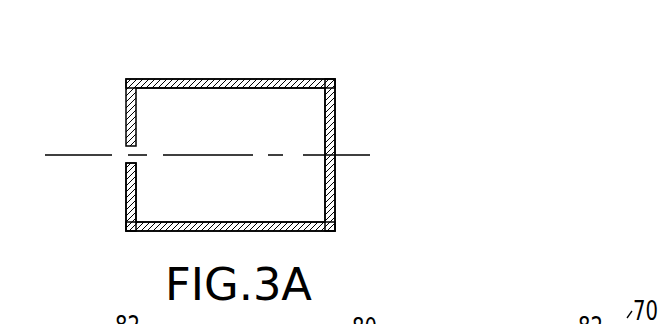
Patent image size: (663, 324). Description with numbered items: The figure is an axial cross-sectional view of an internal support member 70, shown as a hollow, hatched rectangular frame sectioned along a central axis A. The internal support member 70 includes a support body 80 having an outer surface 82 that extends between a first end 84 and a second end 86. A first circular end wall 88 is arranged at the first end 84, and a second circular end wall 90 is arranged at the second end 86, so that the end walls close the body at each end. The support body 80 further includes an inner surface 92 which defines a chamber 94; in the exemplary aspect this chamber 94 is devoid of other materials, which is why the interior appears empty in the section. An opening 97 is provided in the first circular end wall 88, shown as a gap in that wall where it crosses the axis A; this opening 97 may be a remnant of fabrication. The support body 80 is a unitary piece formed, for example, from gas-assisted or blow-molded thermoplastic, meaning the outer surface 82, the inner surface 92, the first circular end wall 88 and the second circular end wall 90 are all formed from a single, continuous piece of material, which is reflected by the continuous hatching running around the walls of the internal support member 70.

The internal support member 70 is at (392, 180).
The support body 80 is at (189, 76).
The outer surface 82 is at (288, 79).
The first end 84 is at (128, 229).
The second end 86 is at (334, 232).
The first circular end wall 88 is at (127, 181).
The second circular end wall 90 is at (336, 112).
The inner surface 92 is at (181, 222).
The chamber 94 is at (282, 134).
The opening 97 is at (123, 153).
The axis A is at (352, 155).